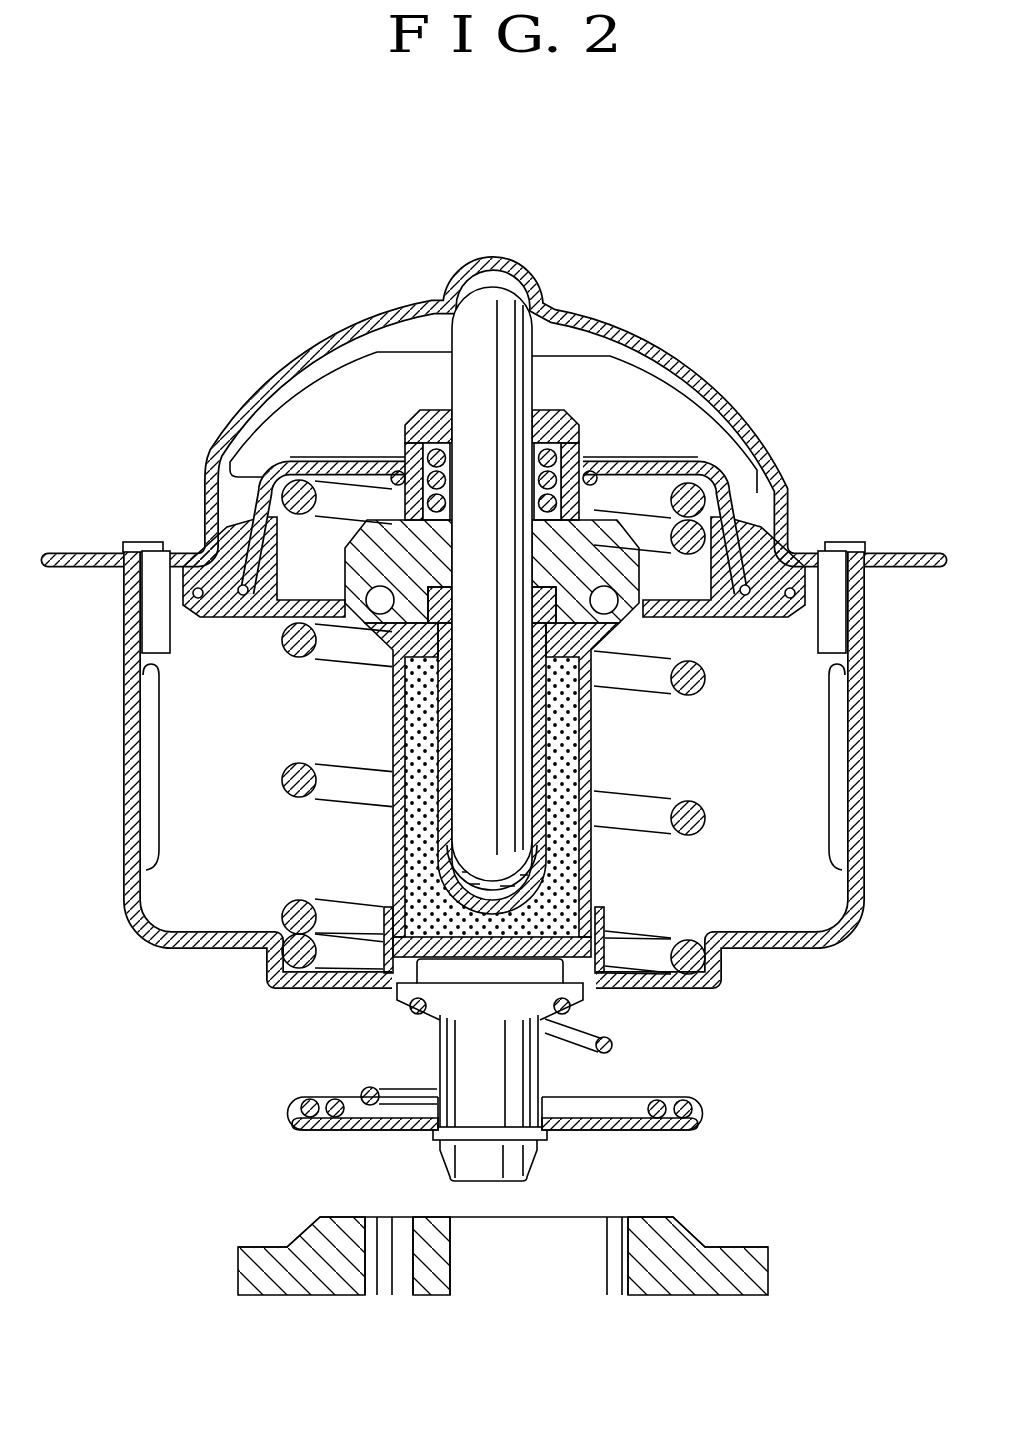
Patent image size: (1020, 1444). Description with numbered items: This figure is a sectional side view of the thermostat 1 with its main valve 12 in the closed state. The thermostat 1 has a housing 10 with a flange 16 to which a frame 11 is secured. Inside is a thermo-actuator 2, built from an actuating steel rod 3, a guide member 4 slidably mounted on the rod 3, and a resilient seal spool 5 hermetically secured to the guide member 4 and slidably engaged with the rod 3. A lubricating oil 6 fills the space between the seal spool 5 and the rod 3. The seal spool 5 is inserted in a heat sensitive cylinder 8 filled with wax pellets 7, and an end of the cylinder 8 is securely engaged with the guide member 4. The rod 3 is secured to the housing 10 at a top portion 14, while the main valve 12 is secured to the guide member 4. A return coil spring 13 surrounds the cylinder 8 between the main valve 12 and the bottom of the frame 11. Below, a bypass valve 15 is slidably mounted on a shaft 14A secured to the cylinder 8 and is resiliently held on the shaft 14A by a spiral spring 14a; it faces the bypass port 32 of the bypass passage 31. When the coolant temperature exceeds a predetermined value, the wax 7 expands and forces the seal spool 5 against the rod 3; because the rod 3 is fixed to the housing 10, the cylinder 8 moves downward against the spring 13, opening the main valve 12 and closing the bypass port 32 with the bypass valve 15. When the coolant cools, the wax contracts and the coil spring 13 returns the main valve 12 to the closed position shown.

The thermostat 1 is at (495, 673).
The thermo-actuator 2 is at (501, 673).
The actuating steel rod 3 is at (507, 298).
The guide member 4 is at (380, 560).
The resilient seal spool 5 is at (425, 822).
The lubricating oil 6 is at (450, 880).
The wax pellets 7 is at (565, 868).
The heat sensitive cylinder 8 is at (597, 732).
The housing 10 is at (495, 362).
The frame 11 is at (123, 797).
The main valve 12 is at (210, 585).
The return coil spring 13 is at (287, 778).
The top portion 14 is at (492, 465).
The shaft 14A is at (473, 1050).
The spiral spring 14a is at (613, 1040).
The bypass valve 15 is at (703, 1103).
The flange 16 is at (918, 551).
The bypass passage 31 is at (467, 1285).
The bypass port 32 is at (577, 1217).